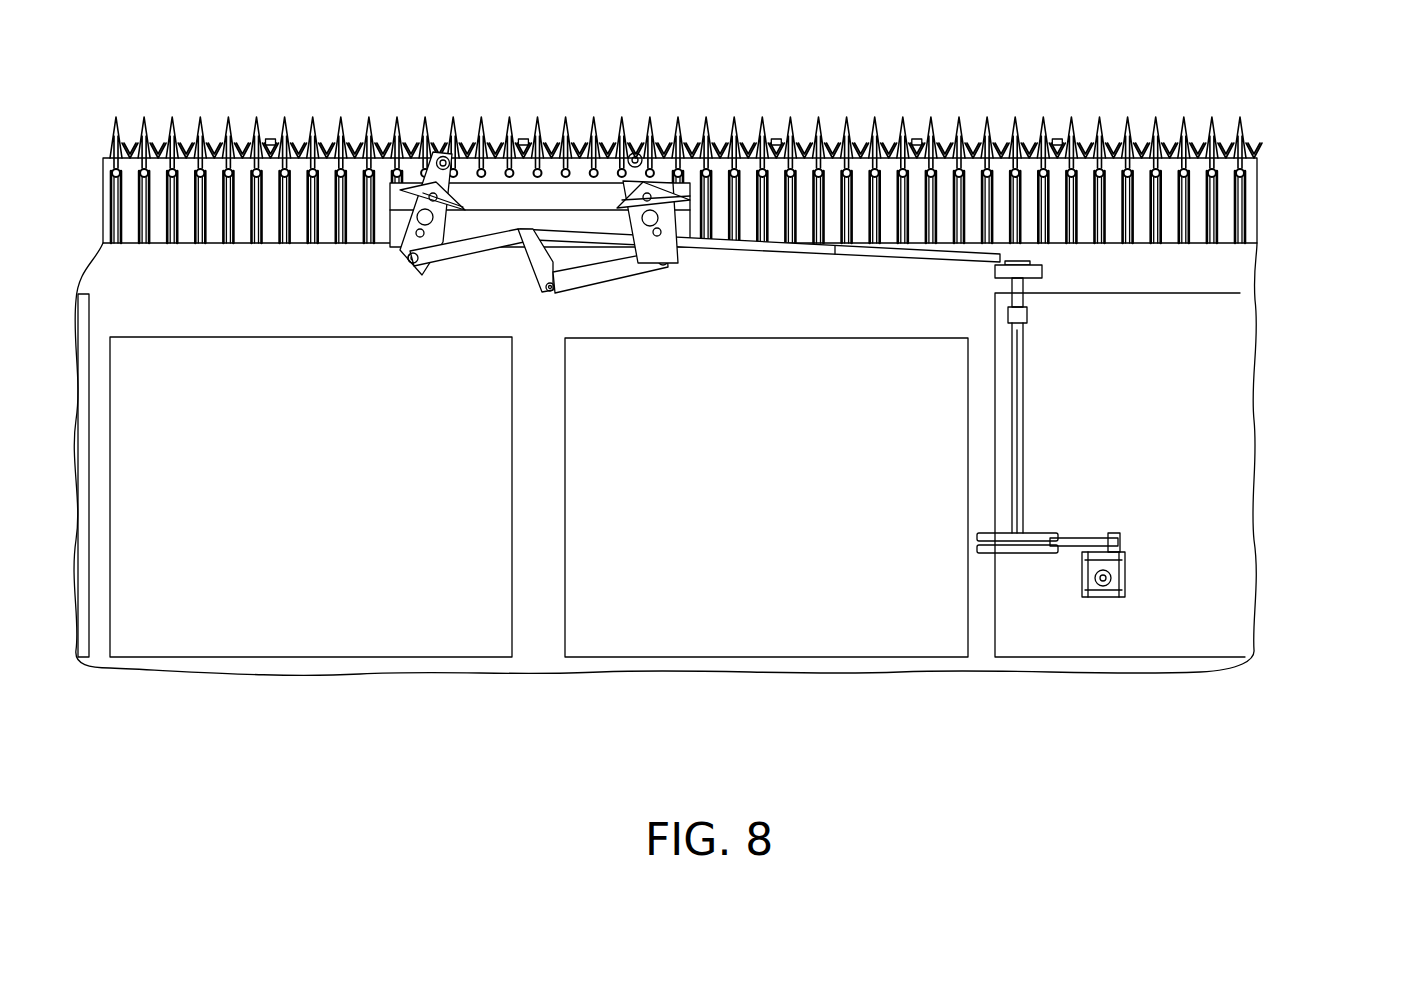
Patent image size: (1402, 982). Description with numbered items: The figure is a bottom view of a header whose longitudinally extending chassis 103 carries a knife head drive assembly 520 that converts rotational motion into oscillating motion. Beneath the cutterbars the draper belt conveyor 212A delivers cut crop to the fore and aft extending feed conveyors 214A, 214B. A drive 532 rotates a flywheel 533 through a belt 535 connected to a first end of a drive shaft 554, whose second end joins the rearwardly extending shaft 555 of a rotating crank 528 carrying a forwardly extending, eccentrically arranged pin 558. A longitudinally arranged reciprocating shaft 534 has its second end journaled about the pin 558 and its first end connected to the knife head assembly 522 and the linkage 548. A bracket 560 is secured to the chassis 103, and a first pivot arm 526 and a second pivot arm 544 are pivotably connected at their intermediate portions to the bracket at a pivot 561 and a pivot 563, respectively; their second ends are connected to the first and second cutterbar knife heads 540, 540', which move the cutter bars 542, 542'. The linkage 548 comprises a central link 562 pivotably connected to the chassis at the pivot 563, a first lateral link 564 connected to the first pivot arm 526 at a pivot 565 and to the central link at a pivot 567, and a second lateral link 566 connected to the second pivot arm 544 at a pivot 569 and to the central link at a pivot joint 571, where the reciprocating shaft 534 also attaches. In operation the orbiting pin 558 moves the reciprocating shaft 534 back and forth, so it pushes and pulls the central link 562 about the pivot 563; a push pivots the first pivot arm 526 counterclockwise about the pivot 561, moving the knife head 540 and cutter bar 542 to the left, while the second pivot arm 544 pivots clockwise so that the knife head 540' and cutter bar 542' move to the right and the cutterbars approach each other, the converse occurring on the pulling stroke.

The chassis 103 is at (1257, 207).
The draper belt conveyor 212A is at (1188, 380).
The feed conveyor 214A is at (771, 601).
The feed conveyor 214B is at (323, 583).
The knife head drive assembly 520 is at (699, 82).
The knife head assembly 522 is at (580, 117).
The first pivot arm 526 is at (690, 268).
The rotating crank 528 is at (1045, 272).
The drive 532 is at (1127, 578).
The flywheel 533 is at (1020, 553).
The reciprocating shaft 534 is at (846, 258).
The belt 535 is at (1082, 537).
The first cutterbar knife head 540 is at (714, 161).
The second cutterbar knife head 540' is at (437, 157).
The cutter bar 542 is at (981, 144).
The cutter bar 542' is at (250, 156).
The second pivot arm 544 is at (403, 254).
The linkage 548 is at (549, 303).
The drive shaft 554 is at (1024, 458).
The rearwardly extending shaft 555 is at (1028, 310).
The pin 558 is at (1042, 266).
The bracket 560 is at (612, 150).
The pivot 561 is at (685, 212).
The central link 562 is at (531, 268).
The pivot 563 is at (425, 217).
The first lateral link 564 is at (608, 284).
The pivot 565 is at (666, 268).
The second lateral link 566 is at (450, 252).
The pivot 567 is at (553, 291).
The pivot 569 is at (408, 265).
The pivot joint 571 is at (527, 230).